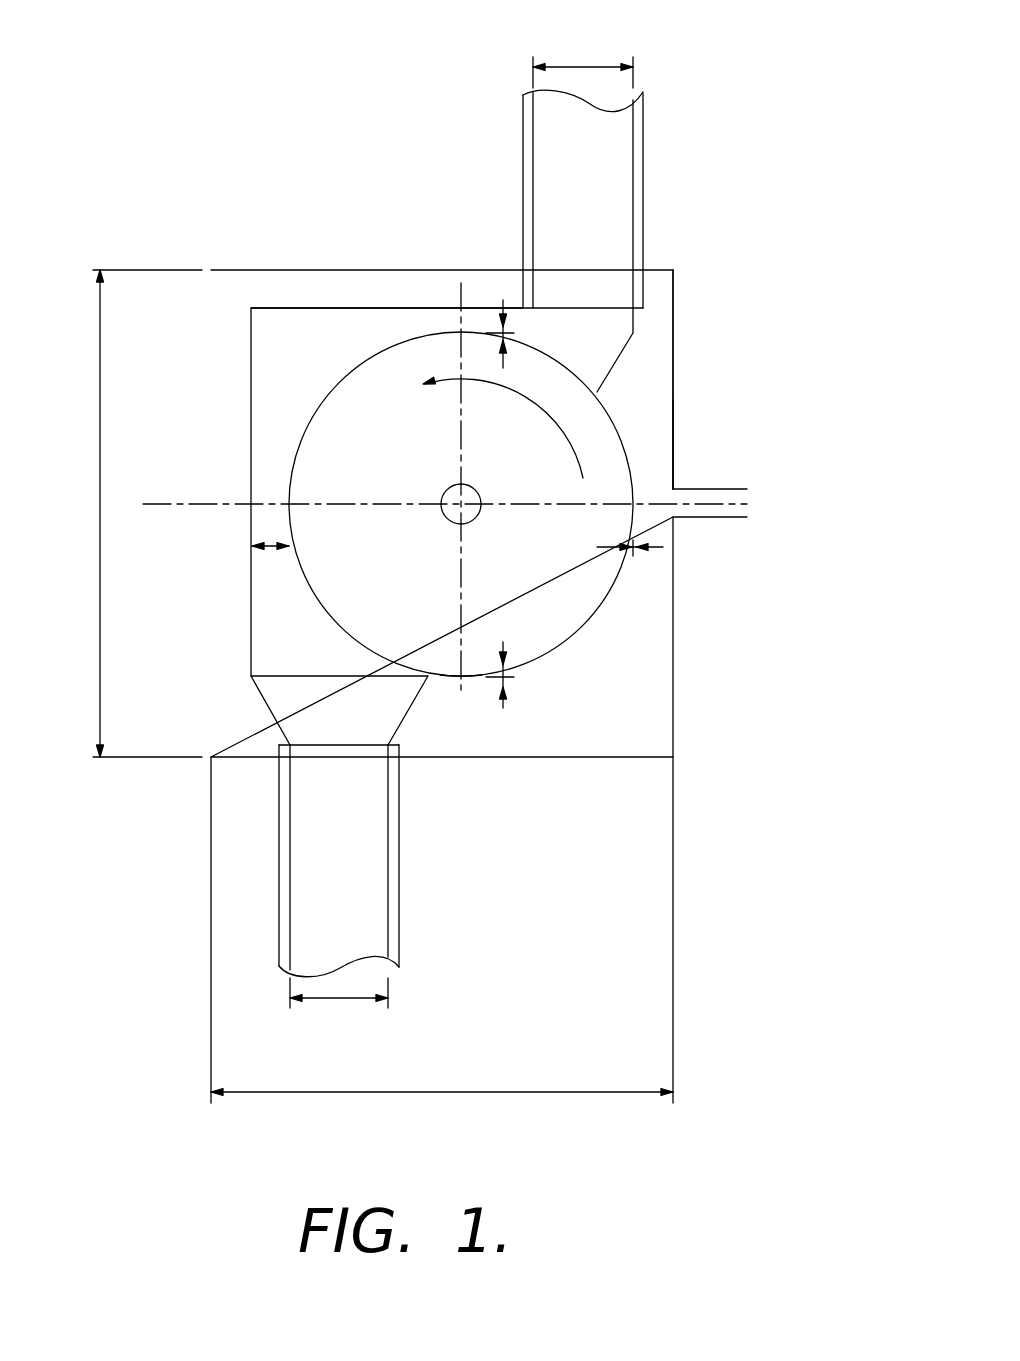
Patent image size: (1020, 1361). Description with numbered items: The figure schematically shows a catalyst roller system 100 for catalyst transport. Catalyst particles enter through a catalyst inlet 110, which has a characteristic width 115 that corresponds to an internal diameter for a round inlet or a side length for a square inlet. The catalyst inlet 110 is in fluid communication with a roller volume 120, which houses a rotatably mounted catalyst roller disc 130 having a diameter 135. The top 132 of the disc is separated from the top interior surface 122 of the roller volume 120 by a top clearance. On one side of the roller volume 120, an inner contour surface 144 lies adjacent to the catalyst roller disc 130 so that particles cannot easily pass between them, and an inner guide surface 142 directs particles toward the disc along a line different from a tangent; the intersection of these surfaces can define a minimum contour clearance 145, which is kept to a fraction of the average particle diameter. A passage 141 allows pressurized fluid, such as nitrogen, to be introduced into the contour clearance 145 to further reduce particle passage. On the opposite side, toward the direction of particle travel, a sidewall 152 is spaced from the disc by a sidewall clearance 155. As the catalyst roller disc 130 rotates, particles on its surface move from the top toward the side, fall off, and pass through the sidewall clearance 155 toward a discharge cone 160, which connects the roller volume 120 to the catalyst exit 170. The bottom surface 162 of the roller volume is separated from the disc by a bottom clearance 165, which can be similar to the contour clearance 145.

The catalyst roller system 100 is at (418, 260).
The catalyst inlet 110 is at (650, 203).
The characteristic width 115 is at (579, 66).
The roller volume 120 is at (335, 322).
The top interior surface 122 is at (378, 288).
The catalyst roller disc 130 is at (335, 366).
The top of catalyst roller disc 132 is at (468, 315).
The diameter 135 is at (310, 456).
The passage 141 is at (754, 505).
The inner guide surface 142 is at (665, 340).
The inner contour surface 144 is at (653, 432).
The contour clearance 145 is at (655, 548).
The sidewall 152 is at (224, 377).
The sidewall clearance 155 is at (272, 548).
The discharge cone 160 is at (282, 701).
The bottom surface 162 is at (461, 677).
The bottom clearance 165 is at (505, 695).
The catalyst exit 170 is at (270, 820).